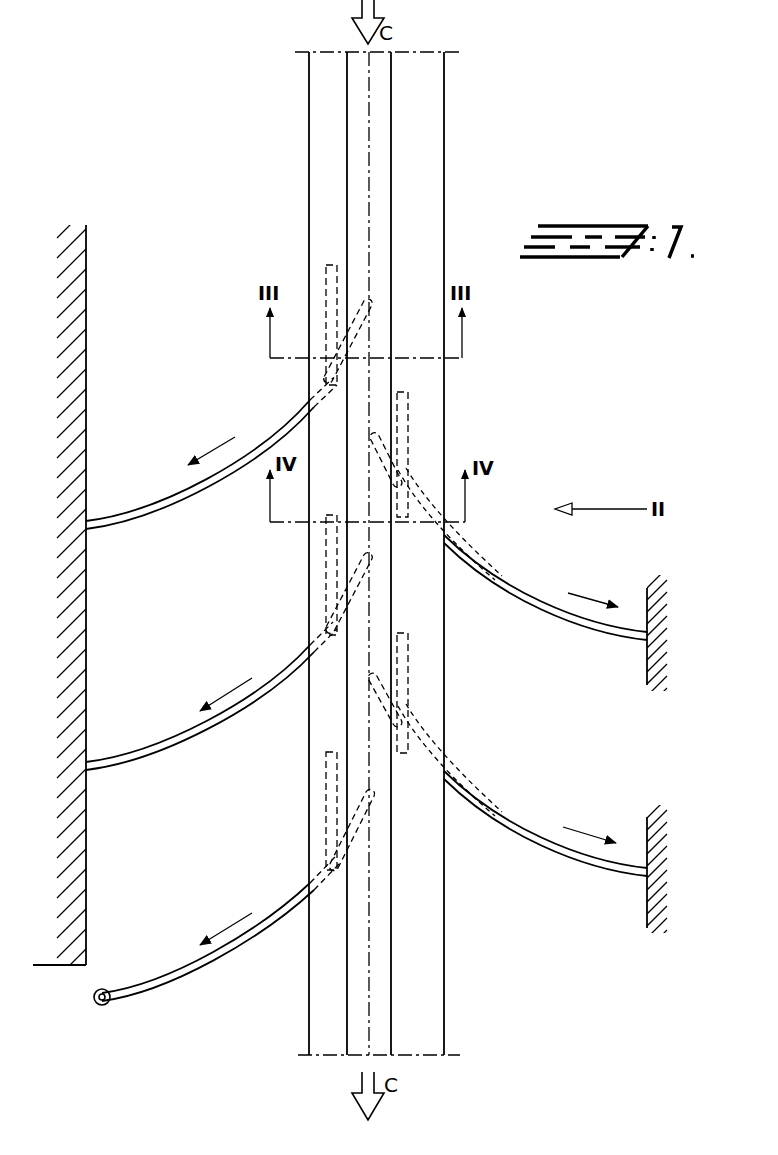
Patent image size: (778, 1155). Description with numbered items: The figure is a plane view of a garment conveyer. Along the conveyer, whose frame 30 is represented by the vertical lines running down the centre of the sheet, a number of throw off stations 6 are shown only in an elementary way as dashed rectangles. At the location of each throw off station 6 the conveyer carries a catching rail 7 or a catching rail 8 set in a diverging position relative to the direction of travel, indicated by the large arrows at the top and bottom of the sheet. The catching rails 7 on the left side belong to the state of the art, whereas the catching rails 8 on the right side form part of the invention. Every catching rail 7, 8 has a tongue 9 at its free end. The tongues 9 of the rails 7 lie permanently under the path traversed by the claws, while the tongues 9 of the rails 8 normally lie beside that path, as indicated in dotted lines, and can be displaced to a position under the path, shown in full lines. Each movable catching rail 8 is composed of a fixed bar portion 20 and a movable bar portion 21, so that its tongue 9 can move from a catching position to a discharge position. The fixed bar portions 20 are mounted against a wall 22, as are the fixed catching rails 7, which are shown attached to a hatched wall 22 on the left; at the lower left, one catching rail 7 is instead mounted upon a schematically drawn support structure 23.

The frame 30 is at (446, 129).
The throw off station 6 is at (404, 406).
The tongue 9 is at (401, 437).
The catching rail 7 is at (180, 490).
The catching rail 8 is at (514, 604).
The wall 22 is at (88, 661).
The movable bar portion 21 is at (451, 765).
The fixed bar portion 20 is at (553, 840).
The support structure 23 is at (107, 1004).